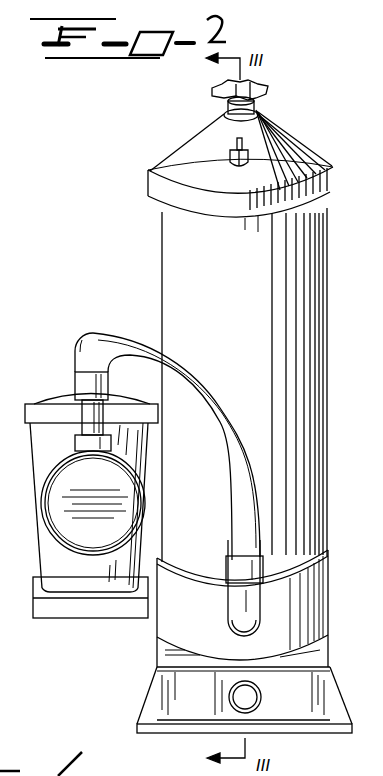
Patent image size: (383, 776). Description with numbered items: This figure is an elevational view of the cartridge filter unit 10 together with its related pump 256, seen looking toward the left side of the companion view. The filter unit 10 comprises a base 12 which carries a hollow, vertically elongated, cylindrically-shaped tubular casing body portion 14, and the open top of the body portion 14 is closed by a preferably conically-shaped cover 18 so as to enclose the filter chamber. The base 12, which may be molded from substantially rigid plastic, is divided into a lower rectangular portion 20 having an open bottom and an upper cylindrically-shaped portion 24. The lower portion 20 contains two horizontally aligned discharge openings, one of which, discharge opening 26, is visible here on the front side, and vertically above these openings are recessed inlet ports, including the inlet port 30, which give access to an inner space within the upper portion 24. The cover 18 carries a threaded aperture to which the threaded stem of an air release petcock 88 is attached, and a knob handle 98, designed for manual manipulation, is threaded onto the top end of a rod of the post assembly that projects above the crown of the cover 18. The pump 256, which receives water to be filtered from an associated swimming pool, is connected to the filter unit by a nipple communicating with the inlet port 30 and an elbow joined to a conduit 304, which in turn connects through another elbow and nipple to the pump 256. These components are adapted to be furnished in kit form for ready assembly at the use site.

The cartridge filter unit 10 is at (134, 294).
The base 12 is at (318, 651).
The tubular casing body portion 14 is at (306, 354).
The cover 18 is at (325, 184).
The lower rectangular portion 20 is at (153, 700).
The upper cylindrically-shaped portion 24 is at (172, 618).
The discharge opening 26 is at (258, 698).
The inlet port 30 is at (263, 624).
The air release petcock 88 is at (232, 146).
The knob handle 98 is at (222, 91).
The pump 256 is at (54, 388).
The conduit 304 is at (198, 406).